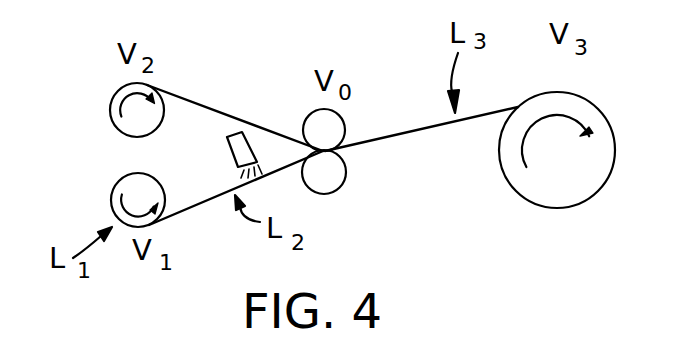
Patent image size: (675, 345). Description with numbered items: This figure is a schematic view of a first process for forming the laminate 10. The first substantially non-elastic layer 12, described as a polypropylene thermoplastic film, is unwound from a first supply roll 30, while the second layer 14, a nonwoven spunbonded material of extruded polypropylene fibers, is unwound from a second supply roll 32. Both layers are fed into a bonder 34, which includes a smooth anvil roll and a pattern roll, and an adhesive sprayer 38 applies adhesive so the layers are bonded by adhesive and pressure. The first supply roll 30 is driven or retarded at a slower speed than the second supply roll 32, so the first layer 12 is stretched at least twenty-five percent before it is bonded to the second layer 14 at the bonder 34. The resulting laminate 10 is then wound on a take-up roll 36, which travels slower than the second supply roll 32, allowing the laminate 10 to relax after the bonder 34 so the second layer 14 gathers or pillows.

The laminate 10 is at (422, 143).
The first substantially non-elastic layer 12 is at (212, 200).
The second layer 14 is at (213, 107).
The first supply roll 30 is at (112, 189).
The second supply roll 32 is at (110, 108).
The bonder 34 is at (332, 189).
The take-up roll 36 is at (593, 197).
The adhesive sprayer 38 is at (236, 160).